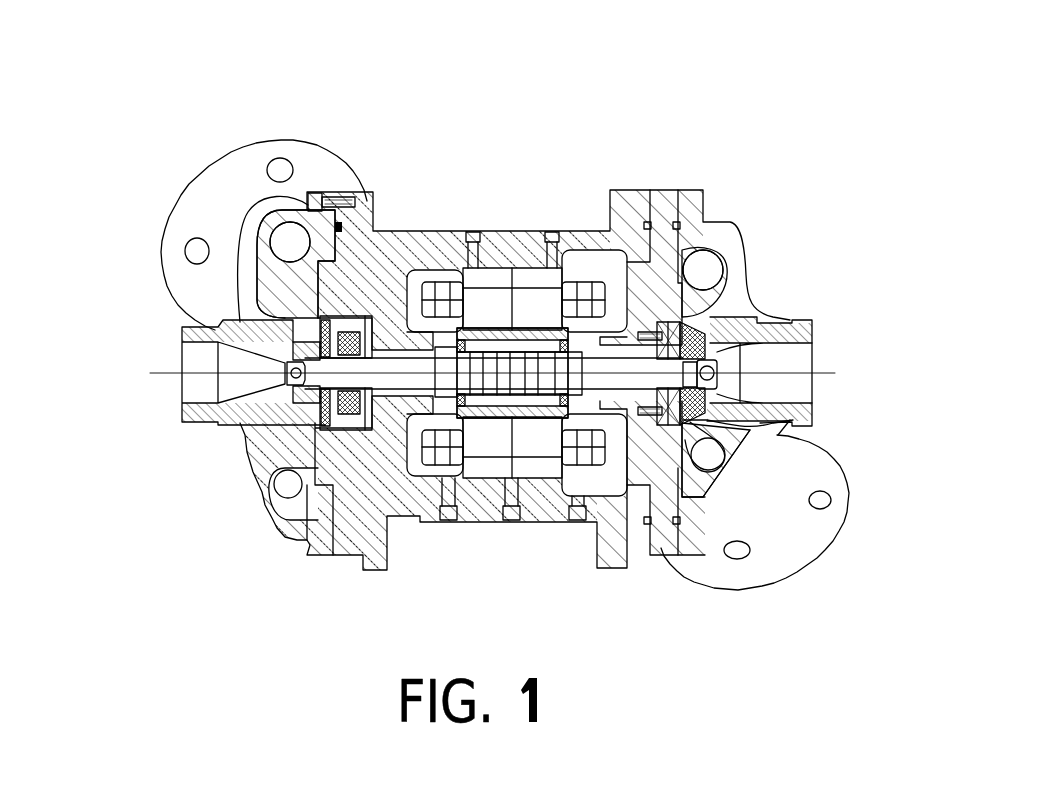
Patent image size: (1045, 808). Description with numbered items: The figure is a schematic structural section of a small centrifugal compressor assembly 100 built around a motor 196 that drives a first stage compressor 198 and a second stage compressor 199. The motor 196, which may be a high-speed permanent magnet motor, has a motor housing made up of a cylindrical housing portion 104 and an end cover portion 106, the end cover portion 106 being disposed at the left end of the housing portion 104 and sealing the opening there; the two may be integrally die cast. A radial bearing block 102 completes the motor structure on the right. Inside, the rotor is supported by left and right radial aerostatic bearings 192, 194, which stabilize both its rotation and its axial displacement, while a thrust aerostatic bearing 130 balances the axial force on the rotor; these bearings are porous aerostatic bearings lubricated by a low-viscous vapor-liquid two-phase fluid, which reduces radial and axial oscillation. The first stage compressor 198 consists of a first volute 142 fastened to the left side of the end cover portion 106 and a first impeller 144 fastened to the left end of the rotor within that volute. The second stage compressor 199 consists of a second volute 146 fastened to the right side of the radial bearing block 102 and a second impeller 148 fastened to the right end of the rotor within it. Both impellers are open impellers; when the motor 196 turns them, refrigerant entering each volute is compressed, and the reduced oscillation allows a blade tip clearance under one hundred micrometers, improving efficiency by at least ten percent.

The centrifugal compressor assembly 100 is at (775, 92).
The radial bearing block 102 is at (663, 208).
The housing portion 104 is at (456, 248).
The end cover portion 106 is at (307, 538).
The thrust aerostatic bearing 130 is at (297, 422).
The first volute 142 is at (217, 220).
The first impeller 144 is at (183, 330).
The second volute 146 is at (780, 513).
The second impeller 148 is at (712, 345).
The radial aerostatic bearing 192 is at (295, 470).
The radial aerostatic bearing 194 is at (813, 392).
The motor 196 is at (552, 375).
The first stage compressor 198 is at (498, 303).
The second stage compressor 199 is at (485, 440).